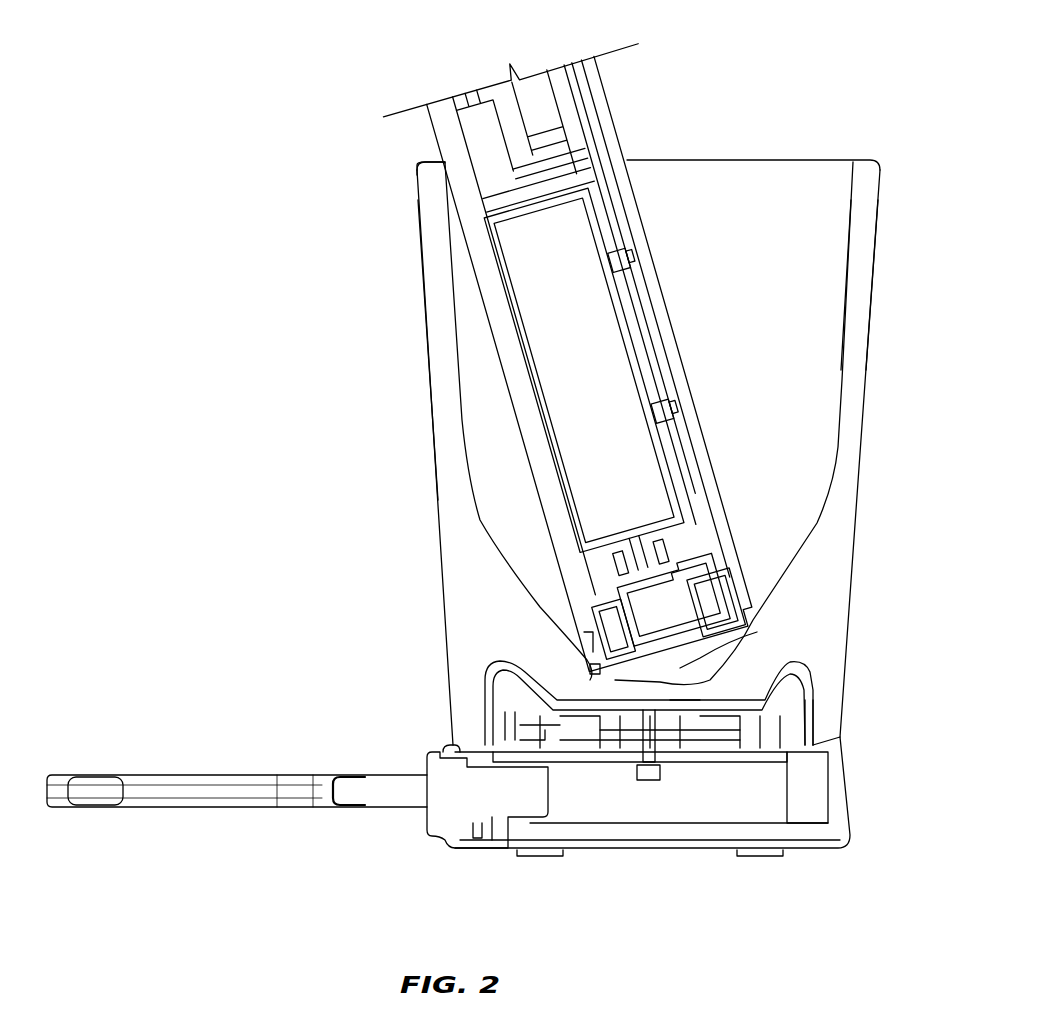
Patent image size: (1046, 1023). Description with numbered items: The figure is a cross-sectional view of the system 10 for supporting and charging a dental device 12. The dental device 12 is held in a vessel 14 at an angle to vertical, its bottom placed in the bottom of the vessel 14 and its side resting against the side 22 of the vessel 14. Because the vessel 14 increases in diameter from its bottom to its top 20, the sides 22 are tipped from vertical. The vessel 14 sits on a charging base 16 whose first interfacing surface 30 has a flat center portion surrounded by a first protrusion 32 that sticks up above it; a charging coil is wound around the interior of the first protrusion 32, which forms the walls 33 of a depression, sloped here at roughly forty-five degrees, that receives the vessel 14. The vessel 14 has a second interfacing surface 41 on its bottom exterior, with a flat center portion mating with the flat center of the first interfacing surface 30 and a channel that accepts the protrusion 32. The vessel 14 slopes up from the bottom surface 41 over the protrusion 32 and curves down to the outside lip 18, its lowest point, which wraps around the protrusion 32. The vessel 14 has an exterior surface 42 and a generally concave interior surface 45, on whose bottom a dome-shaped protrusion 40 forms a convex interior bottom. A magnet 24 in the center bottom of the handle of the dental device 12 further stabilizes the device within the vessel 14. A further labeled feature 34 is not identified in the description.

The system for supporting and charging a dental device 10 is at (258, 272).
The dental device 12 is at (432, 132).
The vessel 14 is at (437, 337).
The charging base 16 is at (845, 793).
The lip 18 is at (465, 745).
The top of the vessel 20 is at (418, 162).
The side of the vessel 22 is at (845, 412).
The magnet 24 is at (657, 617).
The first interfacing surface 30 is at (687, 700).
The first protrusion 32 is at (830, 728).
The walls of the depression 33 is at (532, 692).
The tray wall 34 is at (830, 740).
The protrusion 40 is at (757, 632).
The second interfacing surface 41 is at (590, 672).
The exterior surface 42 is at (858, 332).
The interior surface 45 is at (850, 263).